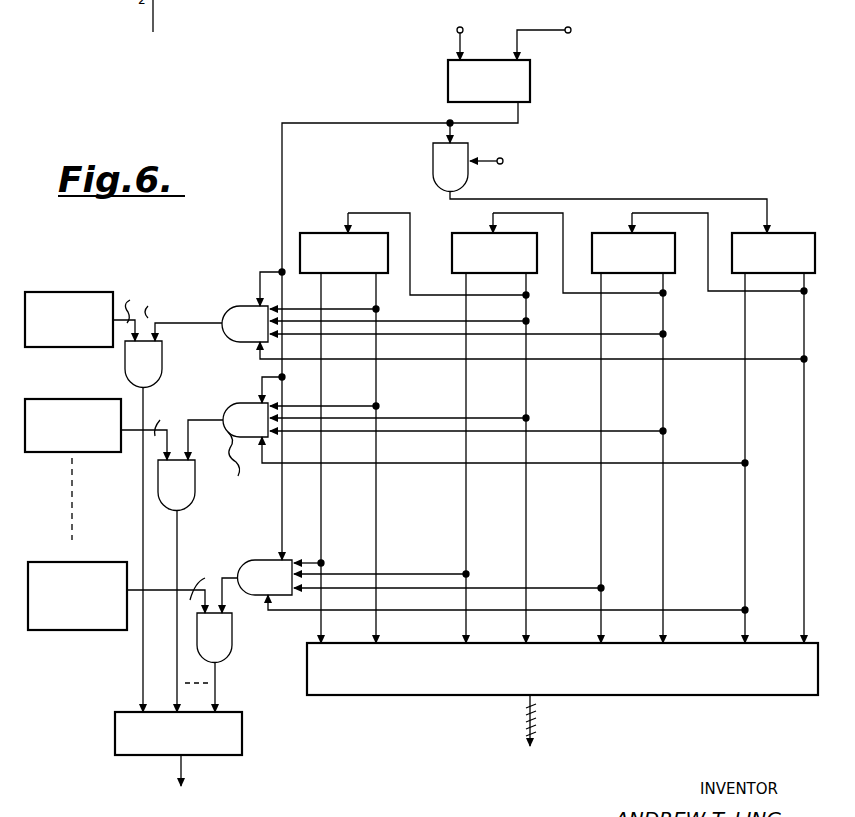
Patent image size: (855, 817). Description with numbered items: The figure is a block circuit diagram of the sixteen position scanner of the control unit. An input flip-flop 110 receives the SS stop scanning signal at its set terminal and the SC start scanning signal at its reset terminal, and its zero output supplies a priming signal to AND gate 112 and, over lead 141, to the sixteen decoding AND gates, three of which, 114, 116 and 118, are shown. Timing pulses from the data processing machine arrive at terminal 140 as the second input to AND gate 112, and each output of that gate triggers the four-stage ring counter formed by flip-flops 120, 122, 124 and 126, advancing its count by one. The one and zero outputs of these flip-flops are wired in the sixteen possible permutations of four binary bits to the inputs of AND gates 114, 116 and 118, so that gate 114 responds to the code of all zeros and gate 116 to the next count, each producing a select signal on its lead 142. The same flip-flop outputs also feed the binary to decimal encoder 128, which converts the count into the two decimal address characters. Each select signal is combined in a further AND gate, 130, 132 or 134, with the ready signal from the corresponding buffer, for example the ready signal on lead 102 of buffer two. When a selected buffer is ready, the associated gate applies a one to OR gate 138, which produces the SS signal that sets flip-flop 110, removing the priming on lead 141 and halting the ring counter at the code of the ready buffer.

The ready output lead 102 is at (129, 437).
The input flip-flop 110 is at (531, 76).
The AND gate 112 is at (432, 165).
The AND gate 114 is at (246, 304).
The AND gate 116 is at (246, 401).
The AND gate 118 is at (250, 548).
The ring counter stage 120 is at (750, 232).
The ring counter stage 122 is at (608, 232).
The ring counter stage 124 is at (462, 230).
The ring counter stage 126 is at (311, 232).
The binary to decimal encoder 128 is at (562, 726).
The AND gate 130 is at (162, 370).
The AND gate 132 is at (193, 488).
The AND gate 134 is at (232, 652).
The OR gate 138 is at (242, 738).
The terminal 140 is at (500, 156).
The lead 141 is at (295, 106).
The select output lead 142 is at (205, 327).